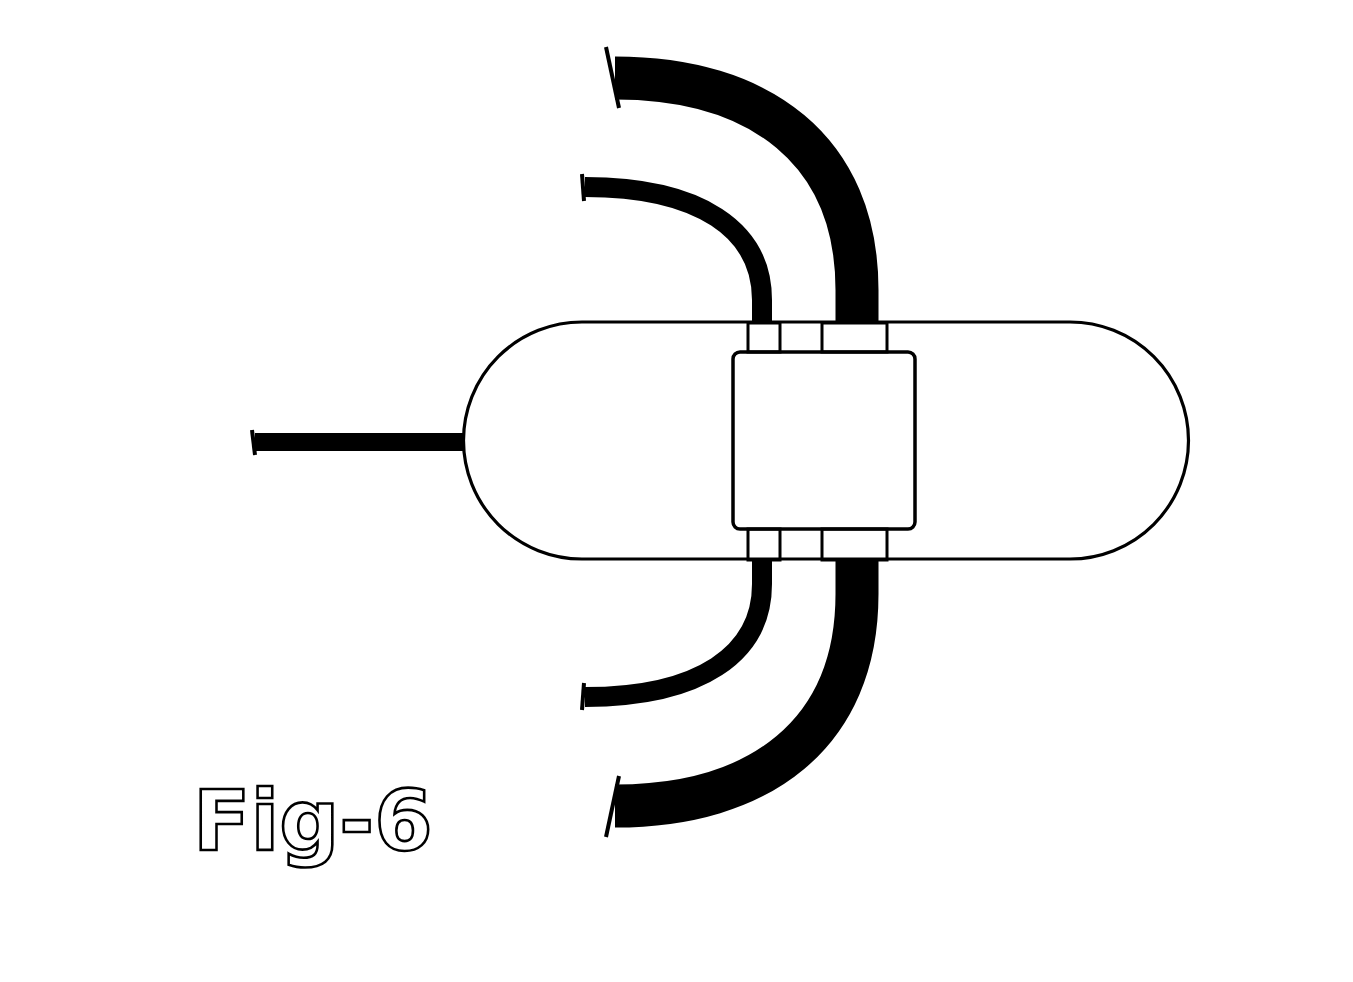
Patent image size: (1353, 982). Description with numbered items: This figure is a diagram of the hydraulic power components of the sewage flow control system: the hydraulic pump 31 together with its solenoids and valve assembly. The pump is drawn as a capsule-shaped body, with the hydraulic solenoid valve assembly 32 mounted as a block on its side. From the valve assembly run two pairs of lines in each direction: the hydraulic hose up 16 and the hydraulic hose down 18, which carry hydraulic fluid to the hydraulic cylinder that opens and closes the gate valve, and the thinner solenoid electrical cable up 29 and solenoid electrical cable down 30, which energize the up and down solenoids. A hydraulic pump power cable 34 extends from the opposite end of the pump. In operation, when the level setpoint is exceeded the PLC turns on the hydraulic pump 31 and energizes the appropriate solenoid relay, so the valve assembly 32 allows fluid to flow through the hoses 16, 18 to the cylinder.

The hydraulic hose up 16 is at (830, 140).
The hydraulic hose down 18 is at (828, 738).
The solenoid electrical cable up 29 is at (647, 678).
The solenoid electrical cable down 30 is at (642, 201).
The hydraulic pump 31 is at (1067, 440).
The hydraulic solenoid valve assembly 32 is at (887, 382).
The hydraulic pump power cable 34 is at (281, 446).